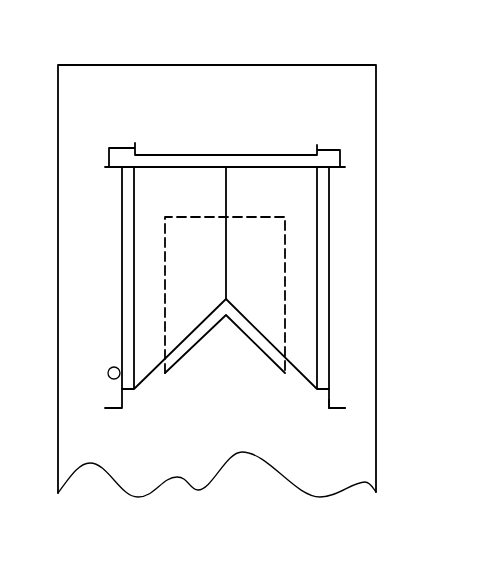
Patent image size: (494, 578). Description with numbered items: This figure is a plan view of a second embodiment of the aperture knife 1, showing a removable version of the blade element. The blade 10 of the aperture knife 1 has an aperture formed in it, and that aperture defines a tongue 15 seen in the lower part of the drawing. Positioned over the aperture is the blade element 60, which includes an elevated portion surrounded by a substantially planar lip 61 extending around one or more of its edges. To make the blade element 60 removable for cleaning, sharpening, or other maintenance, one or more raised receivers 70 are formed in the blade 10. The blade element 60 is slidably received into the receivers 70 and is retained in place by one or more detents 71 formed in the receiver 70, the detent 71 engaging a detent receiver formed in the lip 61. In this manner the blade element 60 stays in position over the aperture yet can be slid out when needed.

The aperture knife 1 is at (388, 77).
The blade 10 is at (355, 108).
The tongue 15 is at (223, 340).
The blade element 60 is at (226, 284).
The lip 61 is at (323, 240).
The raised receiver 70 is at (340, 395).
The detent 71 is at (108, 373).